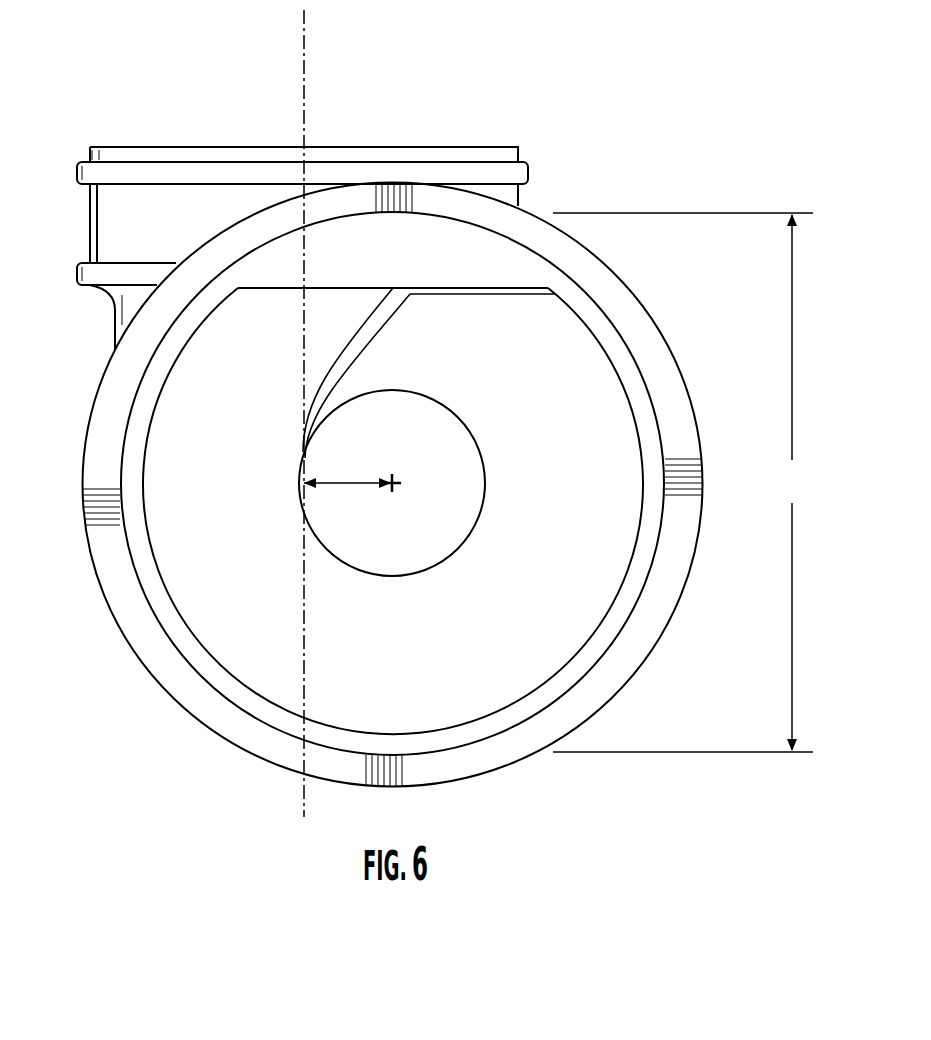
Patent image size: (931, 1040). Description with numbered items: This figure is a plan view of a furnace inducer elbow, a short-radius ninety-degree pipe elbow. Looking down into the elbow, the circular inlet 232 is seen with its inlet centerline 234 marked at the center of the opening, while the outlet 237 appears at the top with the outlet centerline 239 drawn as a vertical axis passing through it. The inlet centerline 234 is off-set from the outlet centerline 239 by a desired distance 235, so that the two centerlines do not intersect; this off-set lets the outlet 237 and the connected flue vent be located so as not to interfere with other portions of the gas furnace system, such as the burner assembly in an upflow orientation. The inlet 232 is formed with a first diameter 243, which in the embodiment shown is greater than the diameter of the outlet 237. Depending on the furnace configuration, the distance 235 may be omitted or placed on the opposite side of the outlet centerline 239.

The inlet 232 is at (540, 684).
The inlet centerline 234 is at (395, 487).
The distance 235 is at (353, 482).
The outlet 237 is at (86, 146).
The outlet centerline 239 is at (306, 81).
The first diameter 243 is at (778, 487).